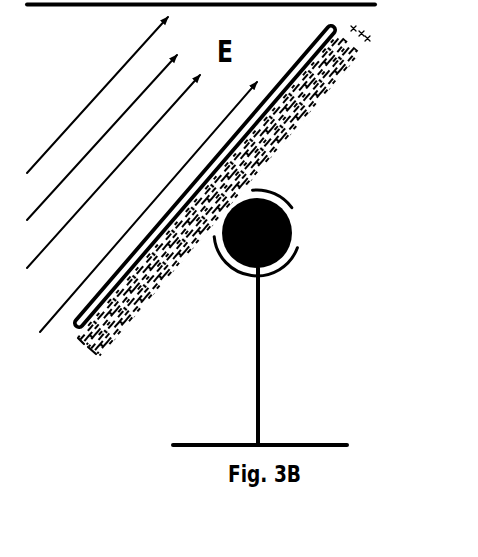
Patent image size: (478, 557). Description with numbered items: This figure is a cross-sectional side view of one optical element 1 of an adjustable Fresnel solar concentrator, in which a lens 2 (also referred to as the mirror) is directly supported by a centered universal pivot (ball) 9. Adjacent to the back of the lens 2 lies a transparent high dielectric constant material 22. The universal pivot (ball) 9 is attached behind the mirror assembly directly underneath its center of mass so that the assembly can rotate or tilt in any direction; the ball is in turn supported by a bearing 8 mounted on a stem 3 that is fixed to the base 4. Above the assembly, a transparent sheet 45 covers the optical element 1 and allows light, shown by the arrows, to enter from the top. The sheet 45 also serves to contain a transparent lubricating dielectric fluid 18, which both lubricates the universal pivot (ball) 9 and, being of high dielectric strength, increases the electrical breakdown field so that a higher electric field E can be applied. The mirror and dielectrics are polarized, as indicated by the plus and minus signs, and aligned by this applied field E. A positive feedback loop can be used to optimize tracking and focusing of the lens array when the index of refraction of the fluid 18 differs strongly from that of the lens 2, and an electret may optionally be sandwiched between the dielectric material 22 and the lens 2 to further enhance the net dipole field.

The optical element 1 is at (220, 235).
The lens 2 is at (309, 45).
The stem 3 is at (262, 343).
The base 4 is at (293, 441).
The bearing 8 is at (292, 208).
The universal pivot (ball) 9 is at (290, 260).
The transparent lubricating dielectric fluid 18 is at (177, 412).
The transparent high dielectric constant material 22 is at (294, 143).
The transparent sheet 45 is at (31, 6).